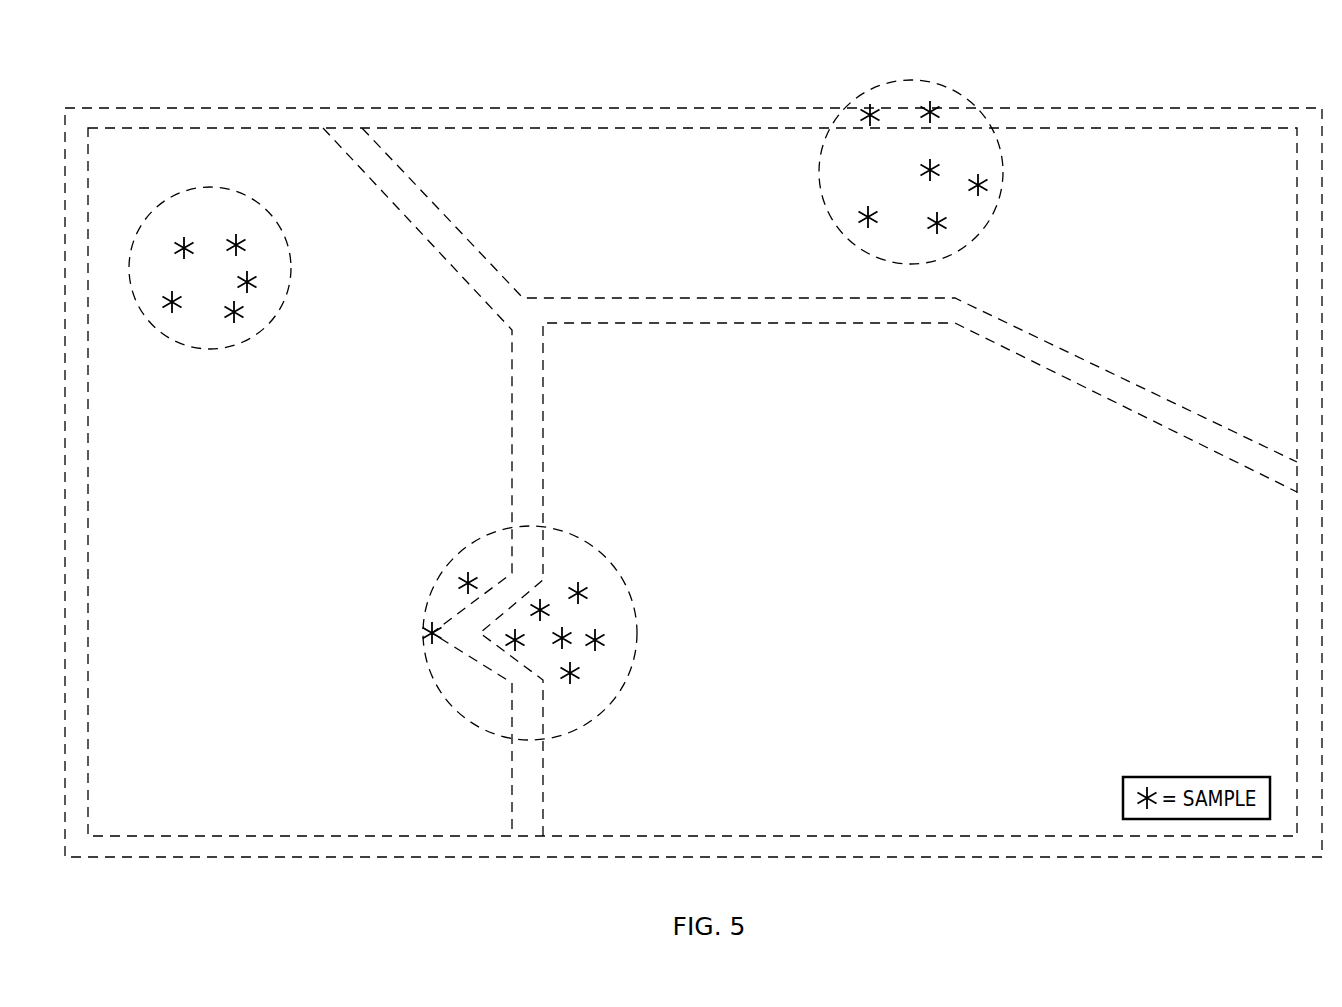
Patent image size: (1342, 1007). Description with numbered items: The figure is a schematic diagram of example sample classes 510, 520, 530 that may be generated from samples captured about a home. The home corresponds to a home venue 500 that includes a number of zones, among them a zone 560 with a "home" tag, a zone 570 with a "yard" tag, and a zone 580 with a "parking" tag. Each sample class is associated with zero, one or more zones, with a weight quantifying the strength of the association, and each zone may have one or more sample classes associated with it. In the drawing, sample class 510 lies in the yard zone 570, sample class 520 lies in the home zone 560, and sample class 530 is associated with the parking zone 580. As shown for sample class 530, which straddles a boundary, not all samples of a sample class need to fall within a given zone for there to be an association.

The home venue 500 is at (1135, 74).
The sample class 510 is at (1001, 201).
The sample class 520 is at (284, 311).
The sample class 530 is at (637, 628).
The zone 560 is at (270, 628).
The zone 570 is at (1166, 286).
The zone 580 is at (996, 608).